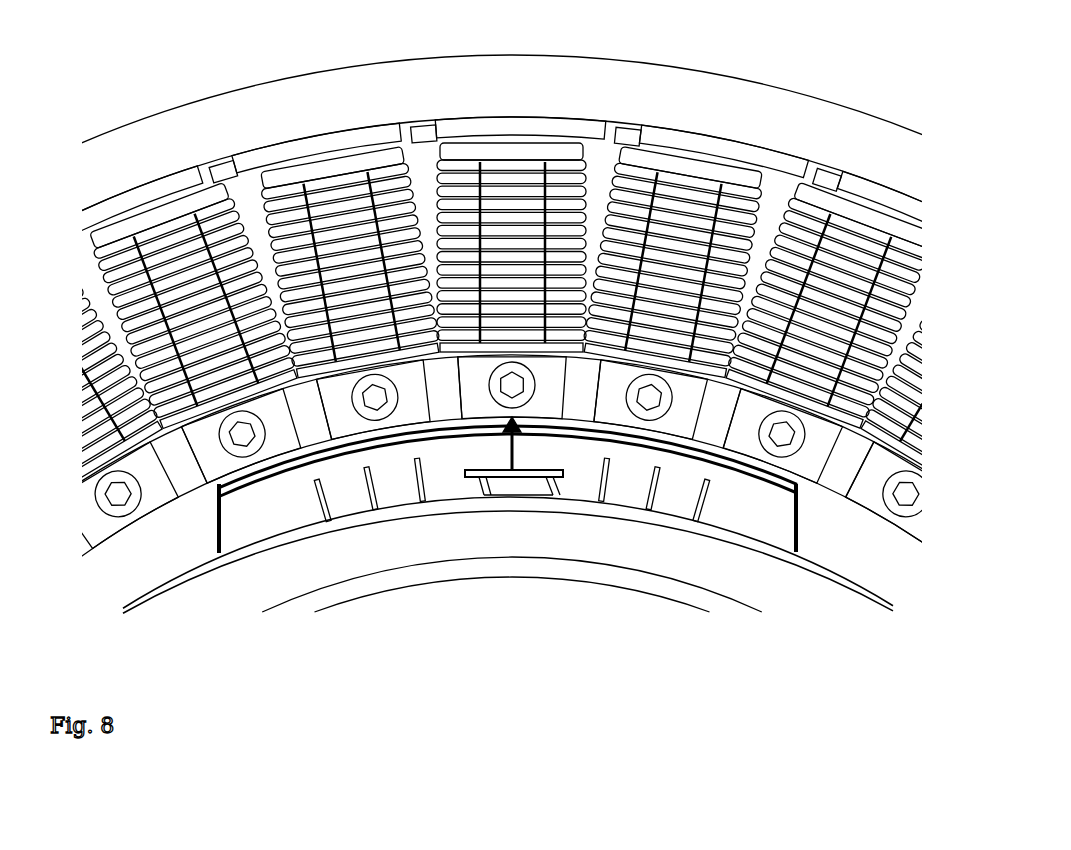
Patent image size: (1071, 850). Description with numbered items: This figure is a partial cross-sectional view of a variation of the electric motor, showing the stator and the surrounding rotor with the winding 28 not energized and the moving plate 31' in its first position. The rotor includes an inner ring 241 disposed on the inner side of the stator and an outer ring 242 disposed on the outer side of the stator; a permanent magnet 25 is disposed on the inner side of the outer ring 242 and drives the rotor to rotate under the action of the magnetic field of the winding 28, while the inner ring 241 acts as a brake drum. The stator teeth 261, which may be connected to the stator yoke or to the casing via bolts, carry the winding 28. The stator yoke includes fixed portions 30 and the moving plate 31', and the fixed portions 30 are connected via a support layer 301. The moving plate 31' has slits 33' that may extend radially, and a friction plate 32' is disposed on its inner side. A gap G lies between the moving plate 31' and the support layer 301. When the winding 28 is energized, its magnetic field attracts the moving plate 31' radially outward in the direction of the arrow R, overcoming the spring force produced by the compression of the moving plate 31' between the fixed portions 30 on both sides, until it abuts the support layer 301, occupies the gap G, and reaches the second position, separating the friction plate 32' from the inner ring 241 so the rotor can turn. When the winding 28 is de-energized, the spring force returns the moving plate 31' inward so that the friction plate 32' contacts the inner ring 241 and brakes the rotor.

The outer ring 242 is at (296, 108).
The stator teeth 261 is at (372, 162).
The permanent magnet 25 is at (490, 125).
The winding 28 is at (263, 183).
The support layer 301 is at (224, 484).
The fixed portions 30 is at (188, 538).
The gap G is at (242, 500).
The inner ring 241 is at (337, 567).
The slits 33' is at (511, 508).
The moving plate 31' is at (484, 514).
The friction plate 32' is at (525, 517).
The arrow R is at (520, 445).